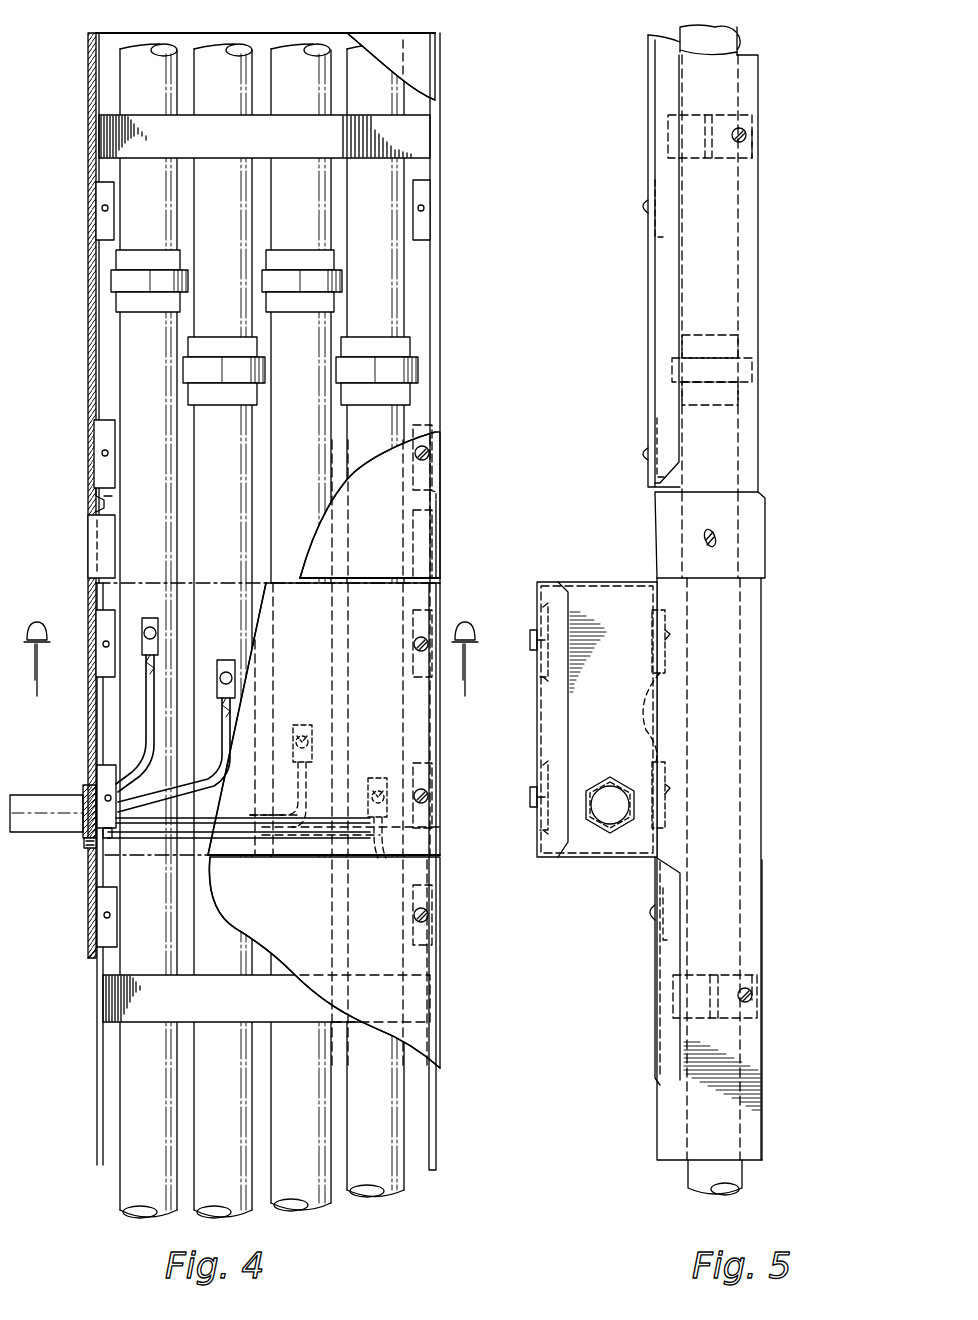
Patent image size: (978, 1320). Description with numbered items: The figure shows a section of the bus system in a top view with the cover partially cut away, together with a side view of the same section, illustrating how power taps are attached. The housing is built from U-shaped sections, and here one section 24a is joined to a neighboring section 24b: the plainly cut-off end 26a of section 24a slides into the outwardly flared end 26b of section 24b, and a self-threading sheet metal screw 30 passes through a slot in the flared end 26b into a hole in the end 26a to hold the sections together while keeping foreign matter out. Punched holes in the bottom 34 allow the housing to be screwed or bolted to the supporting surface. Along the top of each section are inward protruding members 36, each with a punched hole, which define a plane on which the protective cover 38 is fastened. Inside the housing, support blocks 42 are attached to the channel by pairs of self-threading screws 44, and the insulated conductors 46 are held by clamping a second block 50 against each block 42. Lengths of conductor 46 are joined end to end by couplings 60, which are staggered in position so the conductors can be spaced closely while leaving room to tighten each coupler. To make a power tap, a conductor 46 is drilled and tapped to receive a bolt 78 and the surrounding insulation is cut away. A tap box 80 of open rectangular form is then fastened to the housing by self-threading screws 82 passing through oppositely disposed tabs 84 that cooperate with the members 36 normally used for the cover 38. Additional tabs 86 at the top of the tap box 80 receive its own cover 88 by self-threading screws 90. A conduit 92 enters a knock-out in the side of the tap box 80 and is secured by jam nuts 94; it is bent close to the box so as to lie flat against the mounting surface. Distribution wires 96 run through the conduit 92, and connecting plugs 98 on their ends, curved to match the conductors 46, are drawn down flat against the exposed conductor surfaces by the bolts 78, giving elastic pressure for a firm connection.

In FIG. 4, the U-shaped section 24a is at (97, 1118).
In FIG. 5, the U-shaped section 24a is at (762, 694).
In FIG. 4, the U-shaped section 24b is at (98, 345).
In FIG. 5, the U-shaped section 24b is at (735, 236).
In FIG. 4, the end of U-shaped section 26a is at (100, 498).
In FIG. 4, the flared end 26b is at (92, 526).
In FIG. 5, the flared end 26b is at (760, 515).
In FIG. 5, the self-threading sheet metal screw 30 is at (716, 541).
In FIG. 5, the bottom 34 is at (762, 842).
In FIG. 4, the inward protruding member 36 is at (98, 446).
In FIG. 5, the inward protruding member 36 is at (668, 652).
In FIG. 4, the protective cover 38 is at (420, 70).
In FIG. 5, the protective cover 38 is at (648, 318).
In FIG. 5, the support block 42 is at (754, 154).
In FIG. 5, the self-threading screw 44 is at (746, 138).
In FIG. 4, the conductor 46 is at (152, 88).
In FIG. 5, the conductor 46 is at (738, 44).
In FIG. 4, the second block 50 is at (306, 140).
In FIG. 5, the second block 50 is at (700, 138).
In FIG. 4, the coupling 60 is at (128, 281).
In FIG. 5, the coupling 60 is at (742, 371).
In FIG. 4, the bolt 78 is at (150, 618).
In FIG. 5, the tap box 80 is at (594, 582).
In FIG. 5, the self-threading screw 82 is at (652, 636).
In FIG. 5, the tab 84 is at (648, 692).
In FIG. 4, the tab 86 is at (104, 616).
In FIG. 5, the tab 86 is at (542, 608).
In FIG. 5, the cover 88 is at (537, 740).
In FIG. 4, the self-threading screw 90 is at (413, 645).
In FIG. 5, the self-threading screw 90 is at (537, 648).
In FIG. 4, the conduit 92 is at (56, 796).
In FIG. 4, the jam nut 94 is at (84, 843).
In FIG. 5, the jam nut 94 is at (606, 834).
In FIG. 4, the distribution wire 96 is at (146, 724).
In FIG. 4, the connecting plug 98 is at (158, 660).